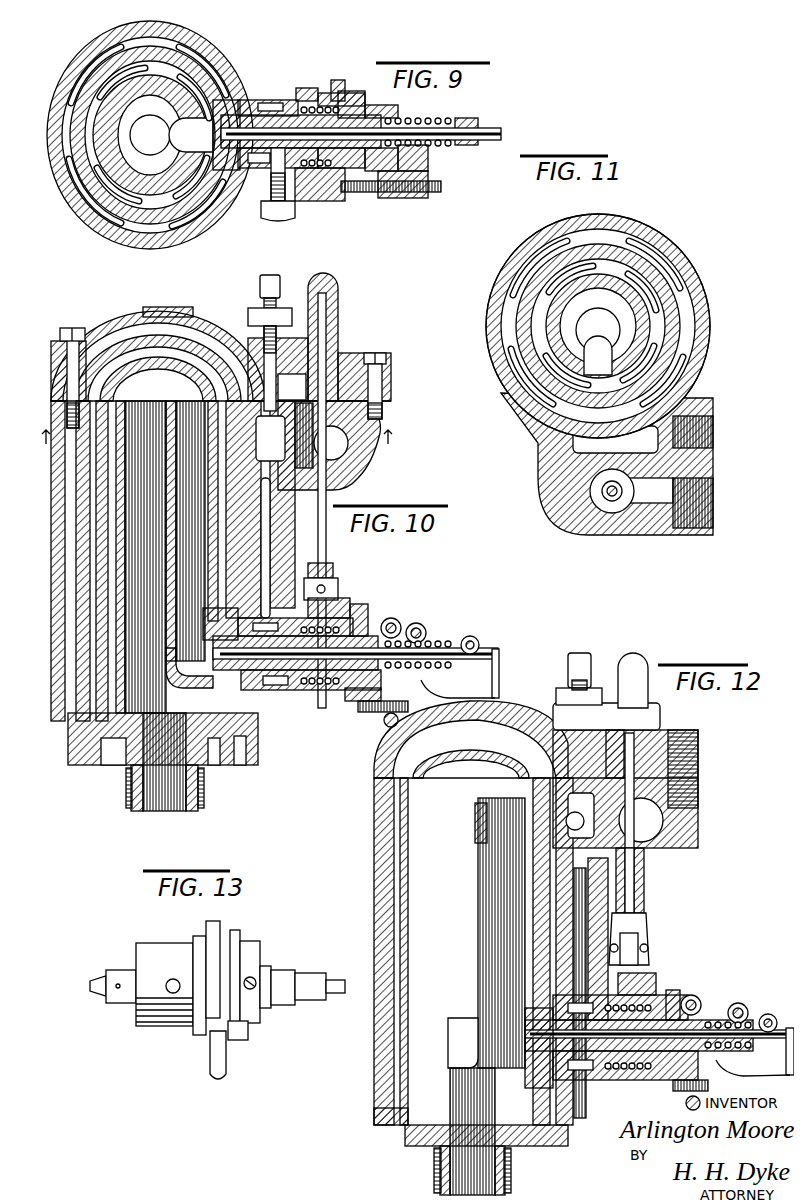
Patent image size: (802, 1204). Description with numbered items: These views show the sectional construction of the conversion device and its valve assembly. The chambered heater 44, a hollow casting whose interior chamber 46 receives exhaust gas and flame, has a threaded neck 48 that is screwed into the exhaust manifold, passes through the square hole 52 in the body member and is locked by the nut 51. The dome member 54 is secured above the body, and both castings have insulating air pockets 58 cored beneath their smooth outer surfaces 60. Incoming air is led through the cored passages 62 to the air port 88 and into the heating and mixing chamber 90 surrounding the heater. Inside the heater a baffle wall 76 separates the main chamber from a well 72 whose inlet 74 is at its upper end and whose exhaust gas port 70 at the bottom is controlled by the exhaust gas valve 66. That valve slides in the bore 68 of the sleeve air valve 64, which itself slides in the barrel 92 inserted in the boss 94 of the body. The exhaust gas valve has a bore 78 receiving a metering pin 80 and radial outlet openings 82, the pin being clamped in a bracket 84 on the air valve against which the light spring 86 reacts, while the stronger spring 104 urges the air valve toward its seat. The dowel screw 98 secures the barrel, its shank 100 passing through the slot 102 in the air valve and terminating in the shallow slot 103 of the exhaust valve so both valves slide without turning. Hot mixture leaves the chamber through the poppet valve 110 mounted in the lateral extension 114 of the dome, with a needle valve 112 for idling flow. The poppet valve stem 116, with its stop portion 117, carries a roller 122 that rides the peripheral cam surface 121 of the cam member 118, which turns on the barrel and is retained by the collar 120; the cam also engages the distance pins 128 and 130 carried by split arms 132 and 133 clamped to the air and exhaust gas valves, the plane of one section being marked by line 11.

In FIG. 10, the section line 11- 11 is at (218, 447).
In FIG. 12, the chambered heater 44 is at (420, 862).
In FIG. 9, the heater chamber 46 is at (100, 30).
In FIG. 10, the heater chamber 46 is at (160, 805).
In FIG. 10, the threaded neck 48 is at (200, 792).
In FIG. 10, the nut 51 is at (220, 776).
In FIG. 12, the nut 51 is at (520, 1140).
In FIG. 10, the square hole 52 is at (118, 776).
In FIG. 12, the square hole 52 is at (408, 1140).
In FIG. 10, the dome member 54 is at (118, 322).
In FIG. 9, the air pockets 58 is at (80, 62).
In FIG. 10, the air pockets 58 is at (98, 334).
In FIG. 9, the outer surfaces 60 is at (168, 240).
In FIG. 11, the outer surfaces 60 is at (705, 305).
In FIG. 9, the cored passages 62 is at (180, 150).
In FIG. 10, the cored passages 62 is at (255, 497).
In FIG. 12, the cored passages 62 is at (486, 796).
In FIG. 10, the air valve 64 is at (310, 585).
In FIG. 12, the air valve 64 is at (598, 950).
In FIG. 10, the exhaust gas valve 66 is at (285, 700).
In FIG. 12, the exhaust gas valve 66 is at (545, 1000).
In FIG. 9, the bore of air valve 68 is at (298, 80).
In FIG. 10, the bore of air valve 68 is at (308, 562).
In FIG. 12, the bore of air valve 68 is at (620, 1007).
In FIG. 10, the exhaust gas port 70 is at (252, 708).
In FIG. 12, the exhaust gas port 70 is at (505, 1050).
In FIG. 9, the well 72 is at (172, 112).
In FIG. 11, the well 72 is at (602, 338).
In FIG. 10, the well 72 is at (170, 688).
In FIG. 12, the well 72 is at (478, 1035).
In FIG. 10, the inlet 74 is at (172, 420).
In FIG. 9, the baffle wall 76 is at (172, 128).
In FIG. 11, the baffle wall 76 is at (594, 338).
In FIG. 10, the baffle wall 76 is at (162, 620).
In FIG. 12, the baffle wall 76 is at (468, 826).
In FIG. 9, the bore 78 is at (425, 138).
In FIG. 10, the bore 78 is at (395, 614).
In FIG. 13, the bore 78 is at (326, 975).
In FIG. 12, the bore 78 is at (692, 1000).
In FIG. 10, the metering pin 80 is at (492, 640).
In FIG. 12, the metering pin 80 is at (659, 1047).
In FIG. 10, the radial outlet openings 82 is at (300, 640).
In FIG. 13, the radial outlet openings 82 is at (108, 983).
In FIG. 9, the bracket 84 is at (480, 106).
In FIG. 10, the bracket 84 is at (490, 668).
In FIG. 12, the bracket 84 is at (756, 1072).
In FIG. 9, the spring 86 is at (455, 112).
In FIG. 10, the spring 86 is at (458, 630).
In FIG. 12, the spring 86 is at (762, 1005).
In FIG. 9, the air port 88 is at (258, 90).
In FIG. 10, the air port 88 is at (308, 538).
In FIG. 9, the heating and mixing chamber 90 is at (132, 160).
In FIG. 11, the heating and mixing chamber 90 is at (640, 350).
In FIG. 10, the heating and mixing chamber 90 is at (92, 508).
In FIG. 13, the barrel 92 is at (172, 1022).
In FIG. 12, the barrel 92 is at (562, 1120).
In FIG. 10, the boss 94 is at (265, 724).
In FIG. 12, the boss 94 is at (585, 1085).
In FIG. 9, the dowel screw 98 is at (276, 200).
In FIG. 9, the shank 100 is at (280, 155).
In FIG. 9, the slot 102 is at (285, 172).
In FIG. 9, the shallow slot 103 is at (262, 212).
In FIG. 9, the spring 104 is at (318, 84).
In FIG. 10, the spring 104 is at (312, 700).
In FIG. 12, the spring 104 is at (628, 1075).
In FIG. 11, the poppet valve 110 is at (598, 510).
In FIG. 10, the poppet valve 110 is at (344, 362).
In FIG. 10, the needle valve 112 is at (255, 372).
In FIG. 12, the needle valve 112 is at (560, 728).
In FIG. 12, the lateral extension 114 is at (692, 768).
In FIG. 12, the valve stem 116 is at (628, 880).
In FIG. 12, the rest or stop portion 117 is at (652, 820).
In FIG. 9, the cam member 118 is at (330, 190).
In FIG. 13, the cam member 118 is at (242, 1034).
In FIG. 12, the cam member 118 is at (652, 976).
In FIG. 9, the collar 120 is at (340, 74).
In FIG. 10, the collar 120 is at (350, 603).
In FIG. 13, the collar 120 is at (238, 942).
In FIG. 12, the collar 120 is at (672, 990).
In FIG. 13, the peripheral cam surface 121 is at (198, 918).
In FIG. 12, the peripheral cam surface 121 is at (650, 962).
In FIG. 10, the roller 122 is at (330, 572).
In FIG. 12, the roller 122 is at (632, 940).
In FIG. 9, the distance pin 128 is at (434, 181).
In FIG. 10, the distance pin 130 is at (360, 705).
In FIG. 12, the distance pin 130 is at (668, 1084).
In FIG. 9, the split arm 132 is at (392, 190).
In FIG. 10, the split arm 133 is at (380, 718).